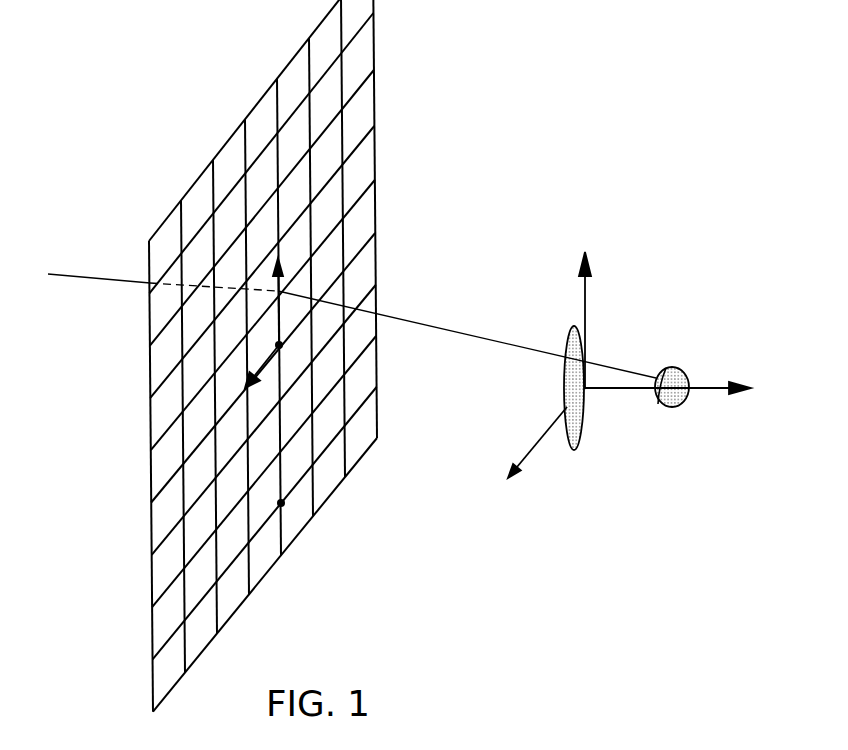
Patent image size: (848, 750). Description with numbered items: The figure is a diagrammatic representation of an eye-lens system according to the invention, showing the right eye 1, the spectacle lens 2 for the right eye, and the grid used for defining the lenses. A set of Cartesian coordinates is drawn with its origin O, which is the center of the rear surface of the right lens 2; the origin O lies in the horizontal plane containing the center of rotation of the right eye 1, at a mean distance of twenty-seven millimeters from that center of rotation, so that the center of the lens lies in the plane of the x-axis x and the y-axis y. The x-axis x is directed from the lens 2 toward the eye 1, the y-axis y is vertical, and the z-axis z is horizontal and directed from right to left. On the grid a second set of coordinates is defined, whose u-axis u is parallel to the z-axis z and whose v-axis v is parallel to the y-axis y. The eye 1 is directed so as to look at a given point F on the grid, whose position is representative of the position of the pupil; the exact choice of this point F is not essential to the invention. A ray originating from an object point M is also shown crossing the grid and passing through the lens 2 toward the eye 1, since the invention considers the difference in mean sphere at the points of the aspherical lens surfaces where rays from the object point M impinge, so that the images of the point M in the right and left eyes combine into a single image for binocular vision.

The right eye 1 is at (669, 366).
The spectacle lens 2 is at (580, 451).
The object point M is at (352, 322).
The point F is at (284, 484).
The origin O is at (441, 370).
The u-axis u is at (262, 365).
The v-axis v is at (284, 295).
The x-axis x is at (676, 388).
The y-axis y is at (592, 319).
The z-axis z is at (537, 450).